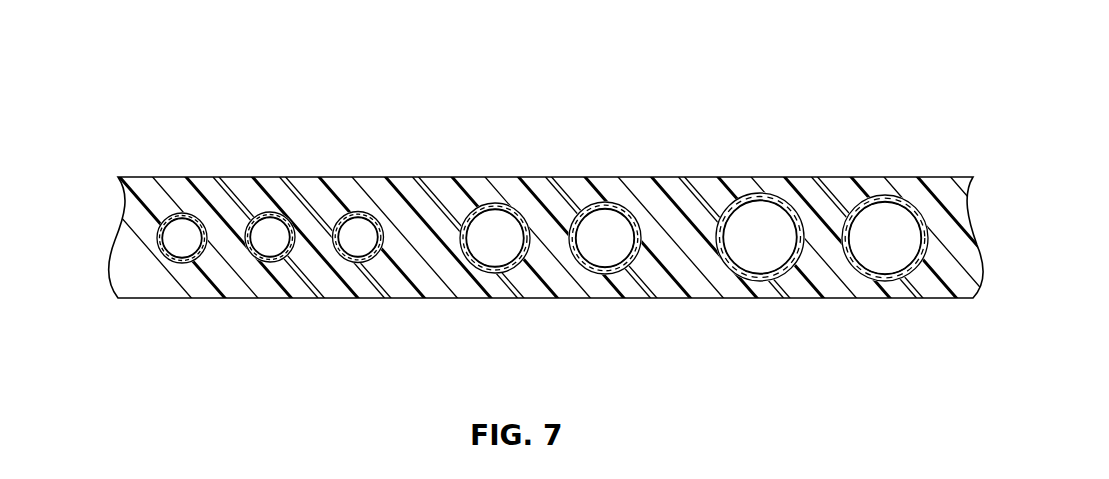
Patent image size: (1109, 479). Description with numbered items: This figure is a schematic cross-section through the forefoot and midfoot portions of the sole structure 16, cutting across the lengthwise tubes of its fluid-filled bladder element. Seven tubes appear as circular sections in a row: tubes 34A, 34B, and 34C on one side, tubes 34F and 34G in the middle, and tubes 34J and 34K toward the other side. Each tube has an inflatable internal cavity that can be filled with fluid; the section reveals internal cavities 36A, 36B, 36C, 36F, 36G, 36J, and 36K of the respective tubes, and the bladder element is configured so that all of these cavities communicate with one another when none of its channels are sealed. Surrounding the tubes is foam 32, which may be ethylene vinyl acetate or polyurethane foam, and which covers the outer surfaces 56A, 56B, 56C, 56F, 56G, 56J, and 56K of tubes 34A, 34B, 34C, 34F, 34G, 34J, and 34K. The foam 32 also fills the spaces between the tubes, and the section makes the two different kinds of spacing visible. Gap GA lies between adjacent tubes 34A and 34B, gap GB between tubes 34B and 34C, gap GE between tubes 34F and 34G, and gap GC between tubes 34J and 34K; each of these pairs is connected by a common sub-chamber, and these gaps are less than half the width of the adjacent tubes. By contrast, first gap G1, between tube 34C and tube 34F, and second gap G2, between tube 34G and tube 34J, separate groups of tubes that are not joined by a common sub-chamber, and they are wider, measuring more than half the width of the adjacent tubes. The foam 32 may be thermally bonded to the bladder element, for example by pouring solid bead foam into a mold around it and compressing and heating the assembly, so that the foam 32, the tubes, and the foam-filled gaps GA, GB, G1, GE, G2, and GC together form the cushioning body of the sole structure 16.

The sole structure 16 is at (230, 205).
The foam 32 is at (441, 196).
The tube 34A is at (178, 213).
The tube 34B is at (266, 212).
The tube 34C is at (356, 211).
The tube 34F is at (493, 203).
The tube 34G is at (638, 207).
The tube 34J is at (792, 205).
The tube 34K is at (921, 208).
The internal cavity 36A is at (183, 242).
The internal cavity 36B is at (270, 242).
The internal cavity 36C is at (358, 243).
The internal cavity 36F is at (497, 240).
The internal cavity 36G is at (607, 240).
The internal cavity 36J is at (762, 242).
The internal cavity 36K is at (887, 242).
The outer surface 56A is at (157, 236).
The outer surface 56B is at (289, 209).
The outer surface 56C is at (372, 207).
The outer surface 56F is at (516, 204).
The outer surface 56G is at (608, 202).
The outer surface 56J is at (758, 193).
The outer surface 56K is at (886, 195).
The gap GA is at (233, 253).
The gap GB is at (320, 255).
The gap GC is at (833, 255).
The gap GE is at (552, 255).
The first gap G1 is at (432, 255).
The second gap G2 is at (695, 255).